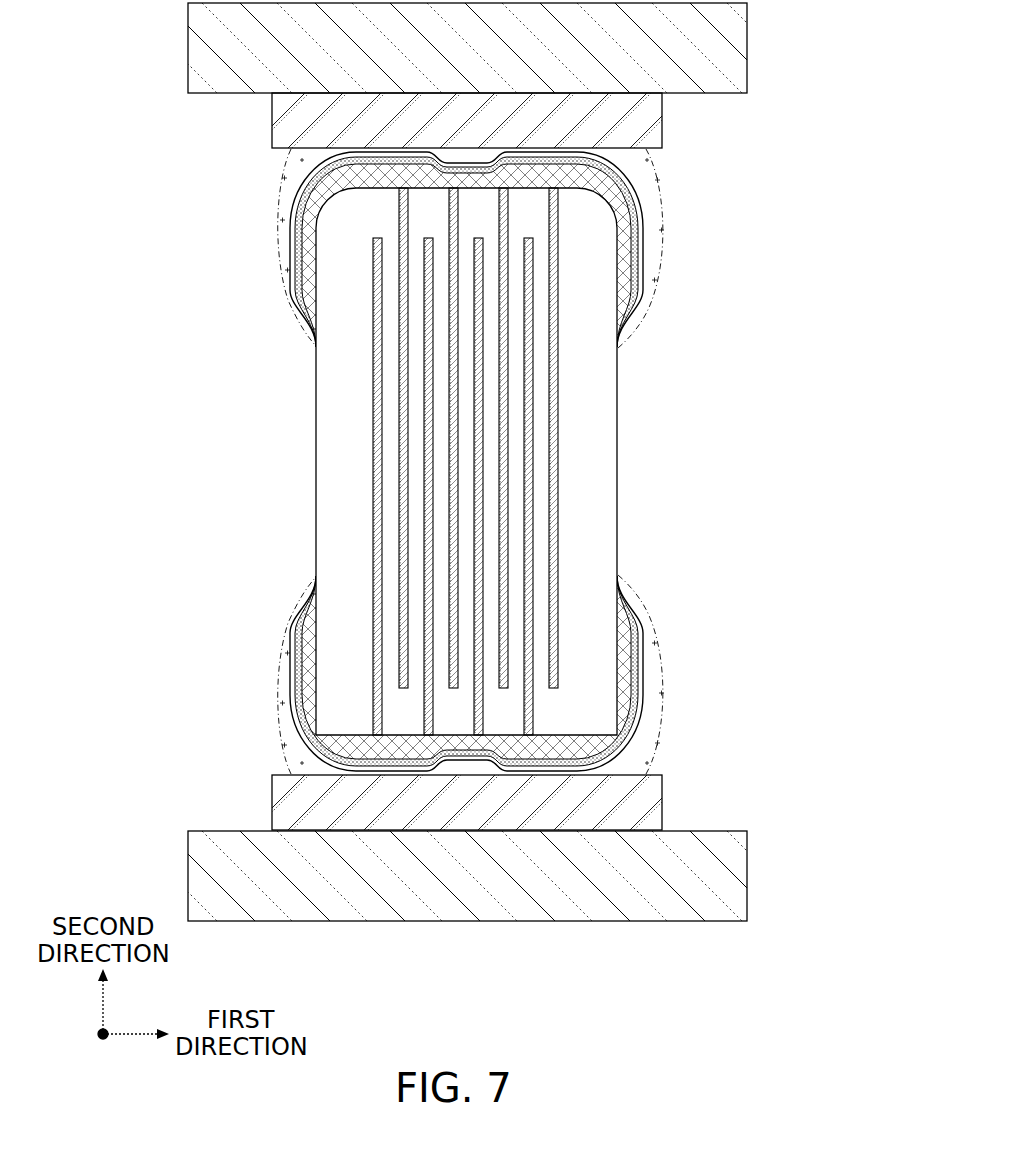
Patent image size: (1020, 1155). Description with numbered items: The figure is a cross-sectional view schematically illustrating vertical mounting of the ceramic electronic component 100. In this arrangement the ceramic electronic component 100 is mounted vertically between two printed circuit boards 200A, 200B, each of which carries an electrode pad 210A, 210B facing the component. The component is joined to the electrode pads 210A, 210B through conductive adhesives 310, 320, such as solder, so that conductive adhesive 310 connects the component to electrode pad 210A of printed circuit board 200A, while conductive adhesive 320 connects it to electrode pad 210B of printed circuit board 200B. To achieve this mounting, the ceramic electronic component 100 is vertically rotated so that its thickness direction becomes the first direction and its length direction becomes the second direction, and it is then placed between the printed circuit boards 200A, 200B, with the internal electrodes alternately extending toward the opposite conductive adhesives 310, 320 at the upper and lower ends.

The ceramic electronic component 100 is at (638, 462).
The printed circuit board 200A is at (728, 876).
The printed circuit board 200B is at (728, 47).
The electrode pad 210A is at (645, 796).
The electrode pad 210B is at (645, 131).
The conductive adhesive 310 is at (648, 744).
The conductive adhesive 320 is at (646, 177).